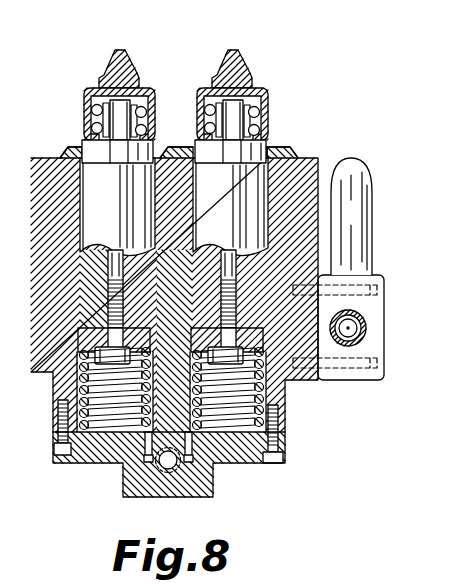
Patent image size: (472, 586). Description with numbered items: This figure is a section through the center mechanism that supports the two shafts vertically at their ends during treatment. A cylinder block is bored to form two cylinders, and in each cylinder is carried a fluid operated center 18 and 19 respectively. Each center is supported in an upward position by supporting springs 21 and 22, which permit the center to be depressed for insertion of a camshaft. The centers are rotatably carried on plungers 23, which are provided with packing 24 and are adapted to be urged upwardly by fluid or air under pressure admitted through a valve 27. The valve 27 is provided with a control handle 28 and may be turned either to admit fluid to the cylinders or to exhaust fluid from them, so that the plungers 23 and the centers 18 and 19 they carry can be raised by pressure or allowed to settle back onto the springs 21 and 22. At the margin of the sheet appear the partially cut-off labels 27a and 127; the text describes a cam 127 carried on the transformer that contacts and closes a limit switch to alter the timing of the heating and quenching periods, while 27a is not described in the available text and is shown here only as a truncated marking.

The fluid operated center 18 is at (112, 58).
The fluid operated center 19 is at (248, 63).
The supporting spring 21 is at (84, 390).
The supporting spring 22 is at (263, 401).
The plunger 23 is at (174, 207).
The packing 24 is at (78, 340).
The valve 27 is at (376, 328).
The control handle 28 is at (372, 203).
The lug portion 27a is at (12, 432).
The cam 127 is at (13, 497).